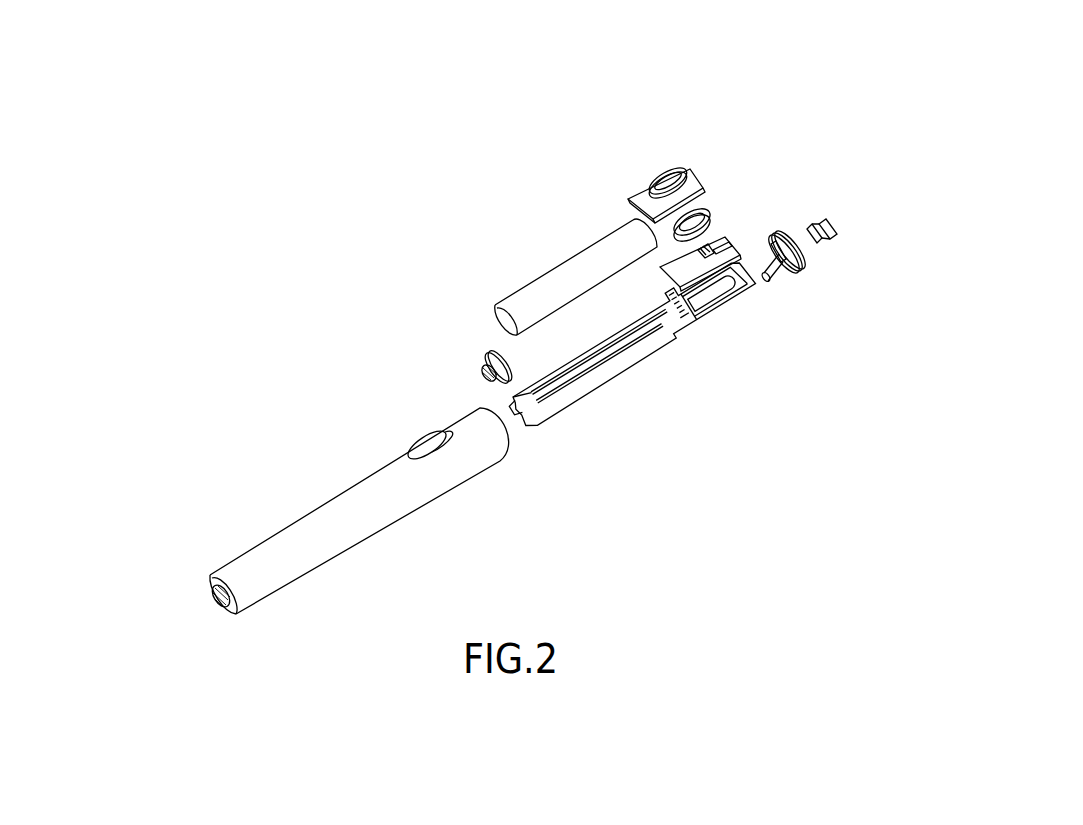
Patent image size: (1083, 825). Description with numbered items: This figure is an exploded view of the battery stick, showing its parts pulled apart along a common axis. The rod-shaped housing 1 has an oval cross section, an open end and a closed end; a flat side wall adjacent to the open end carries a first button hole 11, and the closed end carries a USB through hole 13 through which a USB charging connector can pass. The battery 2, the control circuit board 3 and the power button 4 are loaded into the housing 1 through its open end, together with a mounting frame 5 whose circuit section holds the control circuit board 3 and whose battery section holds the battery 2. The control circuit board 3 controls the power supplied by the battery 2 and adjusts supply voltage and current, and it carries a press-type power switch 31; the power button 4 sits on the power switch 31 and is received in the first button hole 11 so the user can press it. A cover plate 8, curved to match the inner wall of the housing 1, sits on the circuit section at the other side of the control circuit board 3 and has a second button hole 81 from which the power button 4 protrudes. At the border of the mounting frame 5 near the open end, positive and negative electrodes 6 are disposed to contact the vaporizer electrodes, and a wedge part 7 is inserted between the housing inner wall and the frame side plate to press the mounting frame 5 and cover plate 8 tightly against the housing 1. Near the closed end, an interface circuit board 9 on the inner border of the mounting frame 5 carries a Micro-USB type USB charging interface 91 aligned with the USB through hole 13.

The housing 1 is at (435, 505).
The first button hole 11 is at (428, 452).
The USB through hole 13 is at (207, 595).
The battery 2 is at (545, 257).
The control circuit board 3 is at (717, 237).
The power switch 31 is at (735, 243).
The power button 4 is at (707, 210).
The mounting frame 5 is at (647, 373).
The positive and negative electrodes 6 is at (837, 243).
The wedge part 7 is at (803, 280).
The cover plate 8 is at (645, 200).
The second button hole 81 is at (675, 177).
The interface circuit board 9 is at (497, 348).
The USB charging interface 91 is at (480, 370).